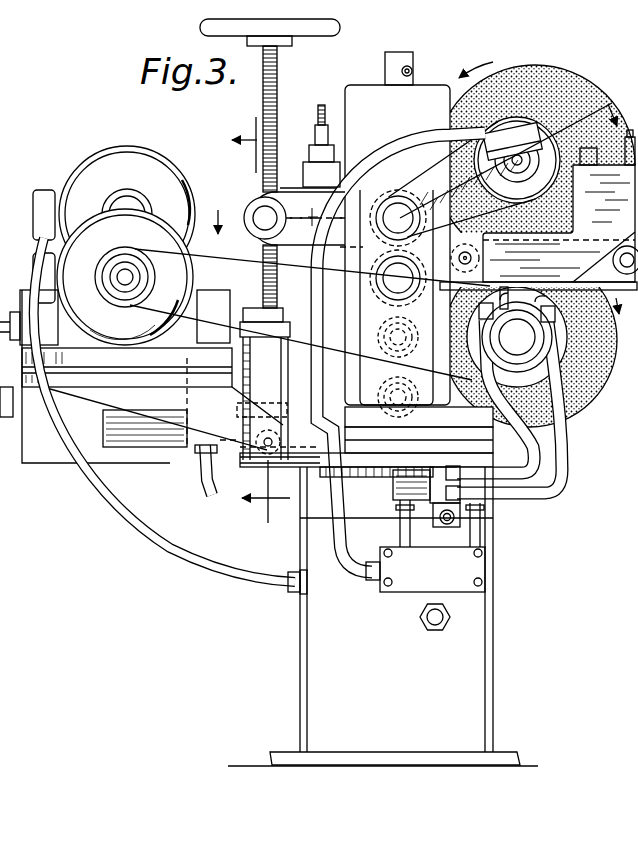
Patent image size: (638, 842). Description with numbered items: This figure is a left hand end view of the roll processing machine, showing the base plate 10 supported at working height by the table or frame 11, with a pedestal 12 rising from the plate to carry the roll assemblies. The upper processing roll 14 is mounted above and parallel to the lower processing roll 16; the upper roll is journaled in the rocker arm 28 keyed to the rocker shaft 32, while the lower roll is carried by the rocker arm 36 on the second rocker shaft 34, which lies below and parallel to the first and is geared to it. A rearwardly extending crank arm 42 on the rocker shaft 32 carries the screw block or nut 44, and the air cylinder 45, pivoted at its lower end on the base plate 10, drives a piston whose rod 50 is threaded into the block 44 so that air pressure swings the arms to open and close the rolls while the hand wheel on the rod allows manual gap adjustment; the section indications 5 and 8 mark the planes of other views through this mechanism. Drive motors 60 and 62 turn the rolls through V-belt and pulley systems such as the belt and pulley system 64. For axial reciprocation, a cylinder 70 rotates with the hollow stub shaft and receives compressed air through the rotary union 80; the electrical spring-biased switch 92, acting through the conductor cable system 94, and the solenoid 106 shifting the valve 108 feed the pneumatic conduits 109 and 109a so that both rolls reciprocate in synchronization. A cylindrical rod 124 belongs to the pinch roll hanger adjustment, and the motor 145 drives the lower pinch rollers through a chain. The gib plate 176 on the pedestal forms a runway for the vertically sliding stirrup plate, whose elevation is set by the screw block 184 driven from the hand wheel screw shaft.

The section line 5- 5 is at (410, 159).
The section line 8- 8 is at (254, 320).
The base plate 10 is at (500, 449).
The table or frame 11 is at (297, 625).
The pedestal 12 is at (484, 417).
The processing roll 14 is at (559, 83).
The processing roll 16 is at (600, 374).
The rocker arm 28 is at (420, 147).
The rocker shaft 32 is at (390, 207).
The second rocker shaft 34 is at (380, 283).
The rocker arm 36 is at (416, 364).
The crank arm 42 is at (252, 192).
The screw block or nut 44 is at (247, 203).
The air cylinder 45 is at (258, 367).
The rod 50 is at (262, 273).
The drive motor 60 is at (101, 152).
The drive motor 62 is at (72, 248).
The V-belt and pulley system 64 is at (247, 229).
The cylinder 70 is at (569, 408).
The rotary union 80 is at (517, 329).
The electrical spring-biased switch 92 is at (533, 143).
The conductor cable system 94 is at (425, 137).
The solenoid 106 is at (393, 486).
The valve 108 is at (438, 518).
The pneumatic conduit 109 is at (551, 466).
The pneumatic conduit 109a is at (543, 491).
The cylindrical rod 124 is at (317, 137).
The motor 145 is at (182, 455).
The gib plate 176 is at (418, 96).
The screw block 184 is at (385, 61).